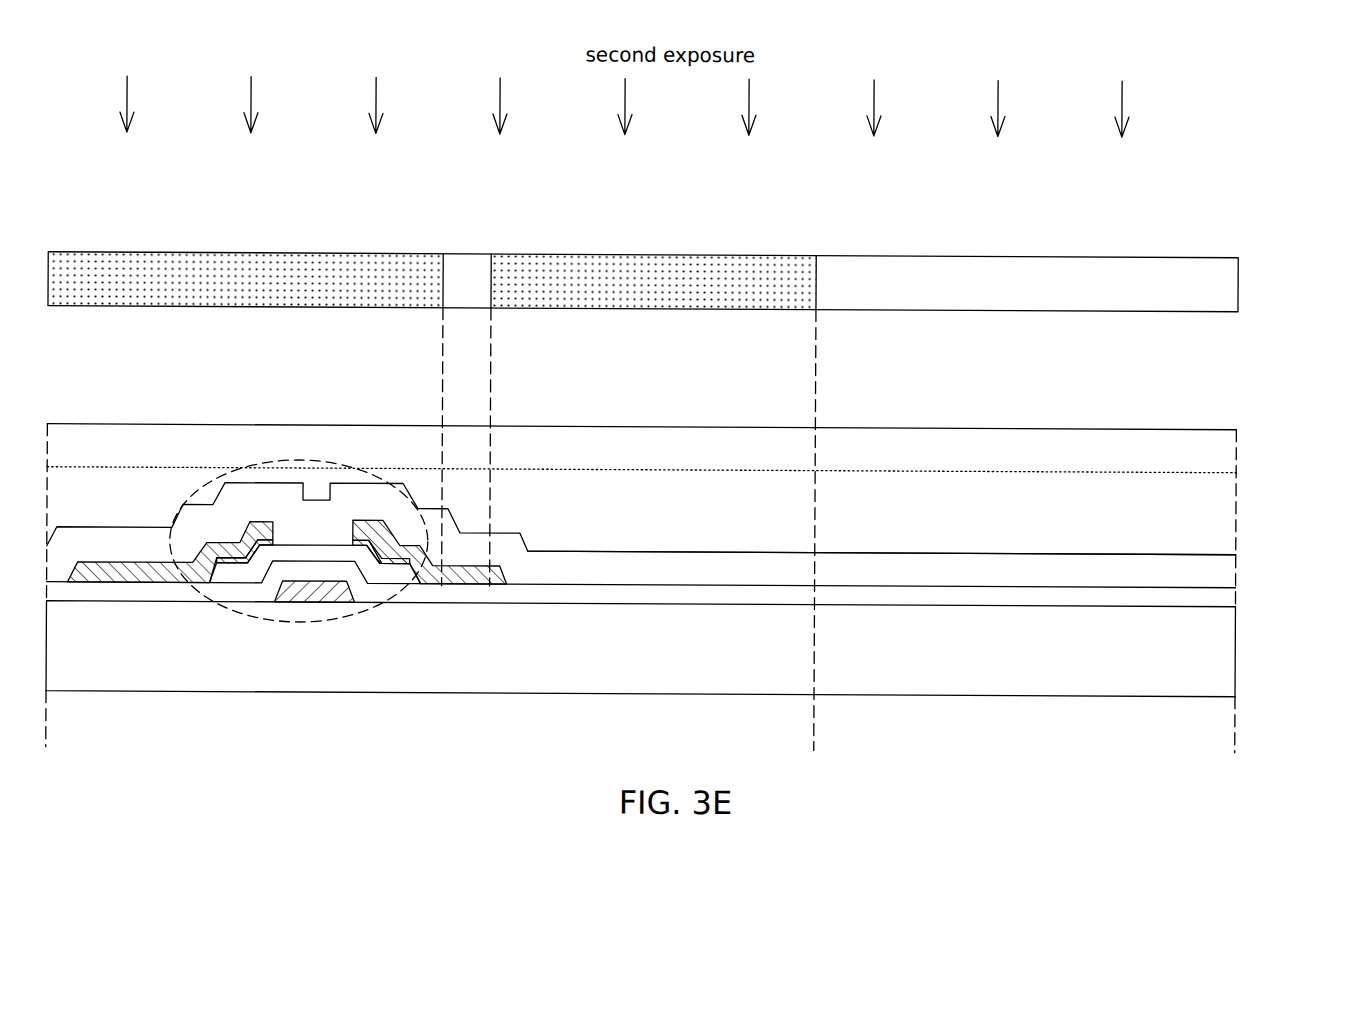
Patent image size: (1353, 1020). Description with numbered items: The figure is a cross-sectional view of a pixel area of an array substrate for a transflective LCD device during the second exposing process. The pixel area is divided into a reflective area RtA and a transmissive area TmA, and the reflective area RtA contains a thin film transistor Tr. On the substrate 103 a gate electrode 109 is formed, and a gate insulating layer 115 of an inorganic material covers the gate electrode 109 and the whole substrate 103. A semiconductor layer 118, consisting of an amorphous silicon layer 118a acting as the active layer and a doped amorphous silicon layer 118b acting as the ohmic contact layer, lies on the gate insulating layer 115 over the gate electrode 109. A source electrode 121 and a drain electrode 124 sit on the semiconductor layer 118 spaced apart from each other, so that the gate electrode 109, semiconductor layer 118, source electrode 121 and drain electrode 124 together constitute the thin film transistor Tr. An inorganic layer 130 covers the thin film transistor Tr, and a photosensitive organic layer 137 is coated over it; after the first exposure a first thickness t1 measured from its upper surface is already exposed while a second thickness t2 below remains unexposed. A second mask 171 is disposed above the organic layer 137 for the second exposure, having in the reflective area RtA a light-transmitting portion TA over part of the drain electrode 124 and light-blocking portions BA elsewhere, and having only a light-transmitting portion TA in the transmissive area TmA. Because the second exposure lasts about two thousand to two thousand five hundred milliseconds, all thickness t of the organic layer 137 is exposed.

The substrate 103 is at (1172, 662).
The gate electrode 109 is at (318, 607).
The gate insulating layer 115 is at (930, 587).
The semiconductor layer 118 is at (410, 385).
The amorphous silicon layer 118a is at (341, 555).
The doped amorphous silicon layer 118b is at (273, 543).
The source electrode 121 is at (224, 556).
The drain electrode 124 is at (433, 528).
The inorganic layer 130 is at (1025, 563).
The organic layer 137 is at (714, 455).
The second mask 171 is at (1182, 257).
The thin film transistor Tr is at (262, 622).
The light-transmitting portion TA is at (465, 279).
The light-blocking portion BA is at (688, 286).
The first thickness t1 is at (1255, 425).
The second thickness t2 is at (1255, 473).
The all thickness t is at (1293, 425).
The reflective area RtA is at (47, 726).
The transmissive area TmA is at (1236, 726).